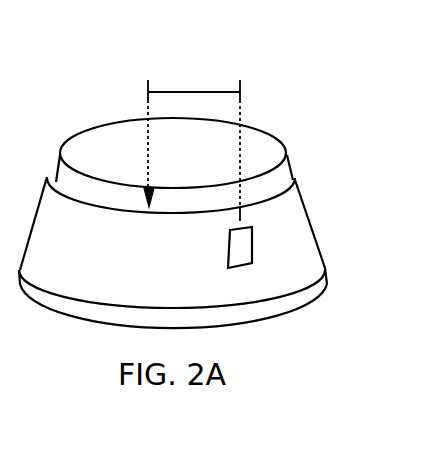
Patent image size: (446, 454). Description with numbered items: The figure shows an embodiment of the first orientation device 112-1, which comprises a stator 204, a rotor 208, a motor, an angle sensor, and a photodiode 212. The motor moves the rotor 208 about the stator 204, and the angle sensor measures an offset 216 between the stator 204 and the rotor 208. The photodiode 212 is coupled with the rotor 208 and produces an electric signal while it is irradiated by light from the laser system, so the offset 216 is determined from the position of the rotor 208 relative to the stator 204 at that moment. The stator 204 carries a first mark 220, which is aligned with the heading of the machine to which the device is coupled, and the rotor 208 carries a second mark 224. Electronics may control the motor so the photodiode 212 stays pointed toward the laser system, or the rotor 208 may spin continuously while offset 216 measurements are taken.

The first orientation device 112-1 is at (322, 63).
The stator 204 is at (262, 140).
The rotor 208 is at (302, 198).
The photodiode 212 is at (243, 247).
The offset 216 is at (185, 92).
The first mark 220 is at (133, 205).
The second mark 224 is at (240, 220).